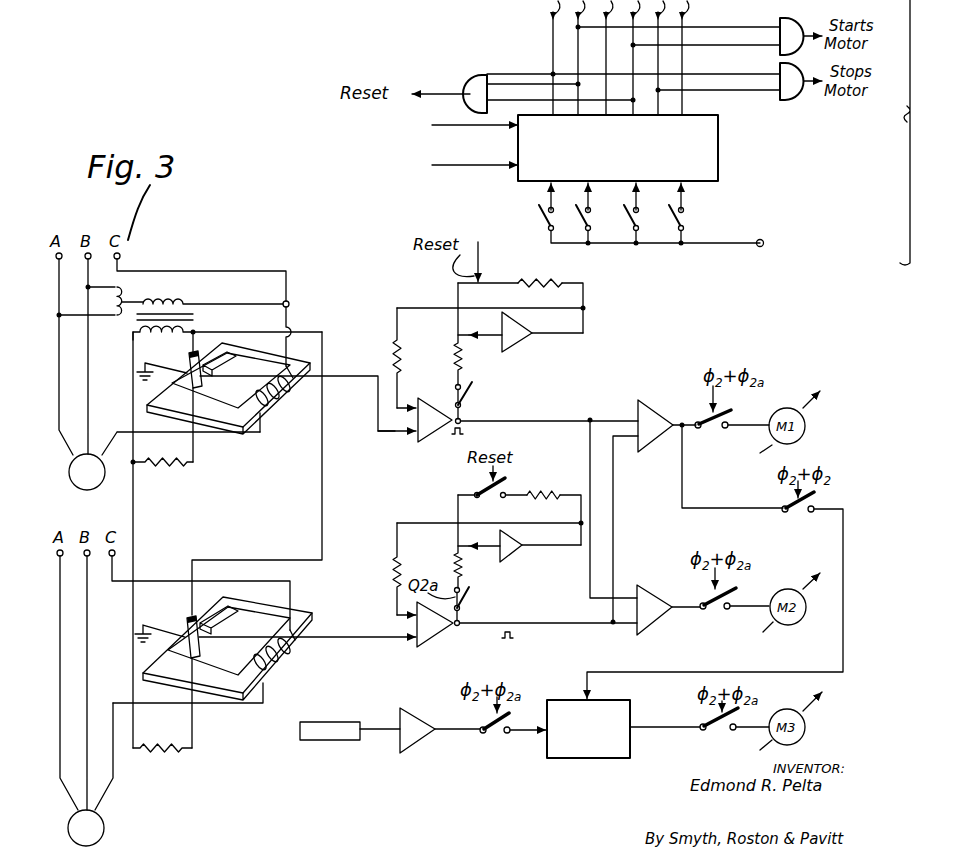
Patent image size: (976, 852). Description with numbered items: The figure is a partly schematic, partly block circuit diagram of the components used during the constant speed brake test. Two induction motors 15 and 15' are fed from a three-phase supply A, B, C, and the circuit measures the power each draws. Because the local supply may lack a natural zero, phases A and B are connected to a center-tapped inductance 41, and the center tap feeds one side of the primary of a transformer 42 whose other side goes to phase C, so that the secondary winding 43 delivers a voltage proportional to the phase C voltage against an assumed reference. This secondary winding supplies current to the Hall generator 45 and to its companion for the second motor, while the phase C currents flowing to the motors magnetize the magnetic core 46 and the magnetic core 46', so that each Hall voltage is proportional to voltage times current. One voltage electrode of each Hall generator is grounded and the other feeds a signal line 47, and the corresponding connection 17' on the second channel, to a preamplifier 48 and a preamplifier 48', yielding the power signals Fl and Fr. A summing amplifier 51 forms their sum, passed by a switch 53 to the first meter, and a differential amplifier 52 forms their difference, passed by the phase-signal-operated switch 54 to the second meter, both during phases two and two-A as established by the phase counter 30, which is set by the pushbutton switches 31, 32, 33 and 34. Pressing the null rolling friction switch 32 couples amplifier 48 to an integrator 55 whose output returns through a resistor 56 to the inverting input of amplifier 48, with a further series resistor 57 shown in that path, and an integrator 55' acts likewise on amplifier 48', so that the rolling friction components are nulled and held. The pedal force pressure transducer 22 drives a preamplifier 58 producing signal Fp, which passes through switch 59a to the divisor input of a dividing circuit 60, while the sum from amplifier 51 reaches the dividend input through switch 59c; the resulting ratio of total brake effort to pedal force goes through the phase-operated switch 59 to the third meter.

The motor 15 is at (71, 484).
The motor 15' is at (109, 824).
The output lead 17' is at (307, 656).
The pedal force pressure transducer 22 is at (345, 736).
The phase counter 30 is at (716, 171).
The switch 31 is at (544, 228).
The null rolling friction switch 32 is at (582, 240).
The switch 33 is at (628, 240).
The switch 34 is at (668, 237).
The inductance 41 is at (120, 287).
The transformer 42 is at (197, 315).
The secondary winding 43 is at (207, 358).
The Hall generator 45 is at (204, 389).
The magnetic core 46 is at (228, 392).
The magnetic core 46' is at (241, 666).
The signal line 47 is at (378, 434).
The preamplifier 48 is at (433, 435).
The preamplifier 48' is at (465, 632).
The summing amplifier 51 is at (653, 418).
The differential amplifier 52 is at (647, 602).
The switch 53 is at (711, 433).
The phase-signal-operated switch 54 is at (689, 608).
The integrator 55 is at (520, 336).
The integrator 55' is at (519, 556).
The resistor 56 is at (399, 346).
The resistor 57 is at (474, 383).
The preamplifier 58 is at (416, 699).
The phase-operated switch 59 is at (713, 731).
The switch 59a is at (490, 738).
The switch 59c is at (792, 514).
The dividing circuit 60 is at (622, 700).